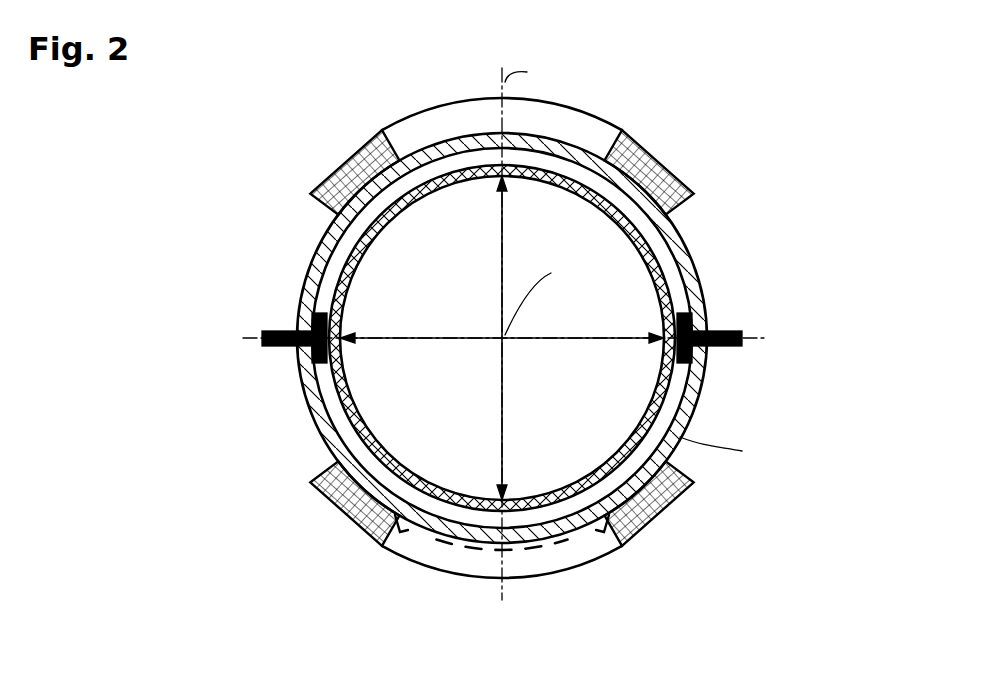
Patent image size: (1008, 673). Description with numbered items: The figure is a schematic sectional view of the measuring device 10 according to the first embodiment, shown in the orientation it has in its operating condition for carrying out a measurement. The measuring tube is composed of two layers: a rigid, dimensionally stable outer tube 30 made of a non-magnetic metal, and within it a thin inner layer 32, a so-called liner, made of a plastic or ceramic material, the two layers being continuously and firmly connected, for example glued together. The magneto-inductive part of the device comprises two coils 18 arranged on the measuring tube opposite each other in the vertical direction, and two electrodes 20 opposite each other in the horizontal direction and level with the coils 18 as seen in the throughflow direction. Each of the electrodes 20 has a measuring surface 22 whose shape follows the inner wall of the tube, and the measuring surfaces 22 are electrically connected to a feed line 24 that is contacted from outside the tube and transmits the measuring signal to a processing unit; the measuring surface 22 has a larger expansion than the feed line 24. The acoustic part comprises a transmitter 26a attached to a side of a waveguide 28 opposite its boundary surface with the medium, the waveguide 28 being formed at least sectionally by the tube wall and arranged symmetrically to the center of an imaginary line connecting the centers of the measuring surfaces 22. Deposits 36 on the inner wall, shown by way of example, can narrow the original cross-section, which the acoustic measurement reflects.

The measuring device 10 is at (124, 193).
The coils 18 is at (322, 174).
The electrodes 20 is at (256, 326).
The measuring surface 22 is at (319, 312).
The feed line 24 is at (268, 347).
The transmitter 26a is at (552, 546).
The waveguide 28 is at (489, 545).
The outer tube 30 is at (556, 147).
The inner layer 32 is at (673, 243).
The deposits 36 is at (416, 178).